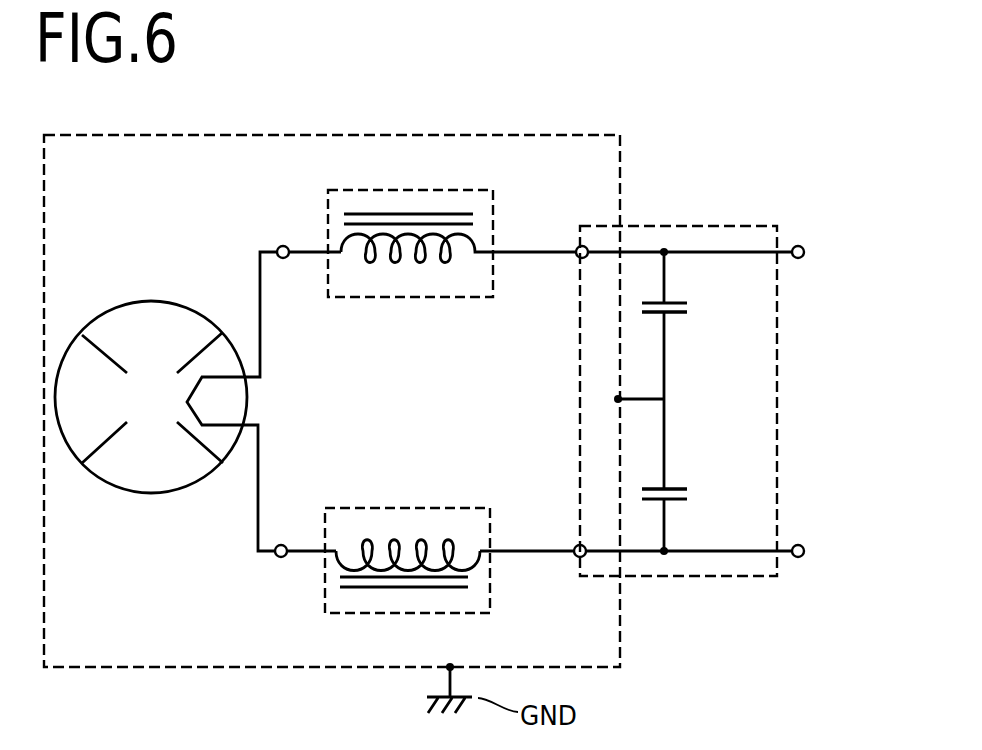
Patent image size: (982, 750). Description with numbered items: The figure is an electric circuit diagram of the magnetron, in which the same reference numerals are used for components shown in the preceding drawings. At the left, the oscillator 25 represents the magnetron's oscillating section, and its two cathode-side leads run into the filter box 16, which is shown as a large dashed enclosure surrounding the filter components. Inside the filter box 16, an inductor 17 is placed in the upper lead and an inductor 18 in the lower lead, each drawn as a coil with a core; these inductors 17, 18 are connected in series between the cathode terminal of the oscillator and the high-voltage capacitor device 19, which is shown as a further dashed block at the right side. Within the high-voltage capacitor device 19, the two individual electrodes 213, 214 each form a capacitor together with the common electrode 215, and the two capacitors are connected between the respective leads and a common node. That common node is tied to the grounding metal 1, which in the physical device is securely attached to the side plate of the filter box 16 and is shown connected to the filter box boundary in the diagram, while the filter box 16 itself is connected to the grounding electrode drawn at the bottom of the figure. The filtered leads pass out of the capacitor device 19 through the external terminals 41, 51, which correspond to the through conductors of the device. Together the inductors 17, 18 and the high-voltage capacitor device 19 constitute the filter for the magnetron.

The filter box 16 is at (248, 133).
The inductor 17 is at (375, 188).
The inductor 18 is at (368, 505).
The high-voltage capacitor device 19 is at (780, 388).
The oscillator 25 is at (147, 301).
The individual electrode 213 is at (673, 302).
The individual electrode 214 is at (673, 500).
The common electrode 215 is at (673, 313).
The grounding metal 1 is at (666, 383).
The first output terminal 41 is at (805, 253).
The second output terminal 51 is at (805, 552).